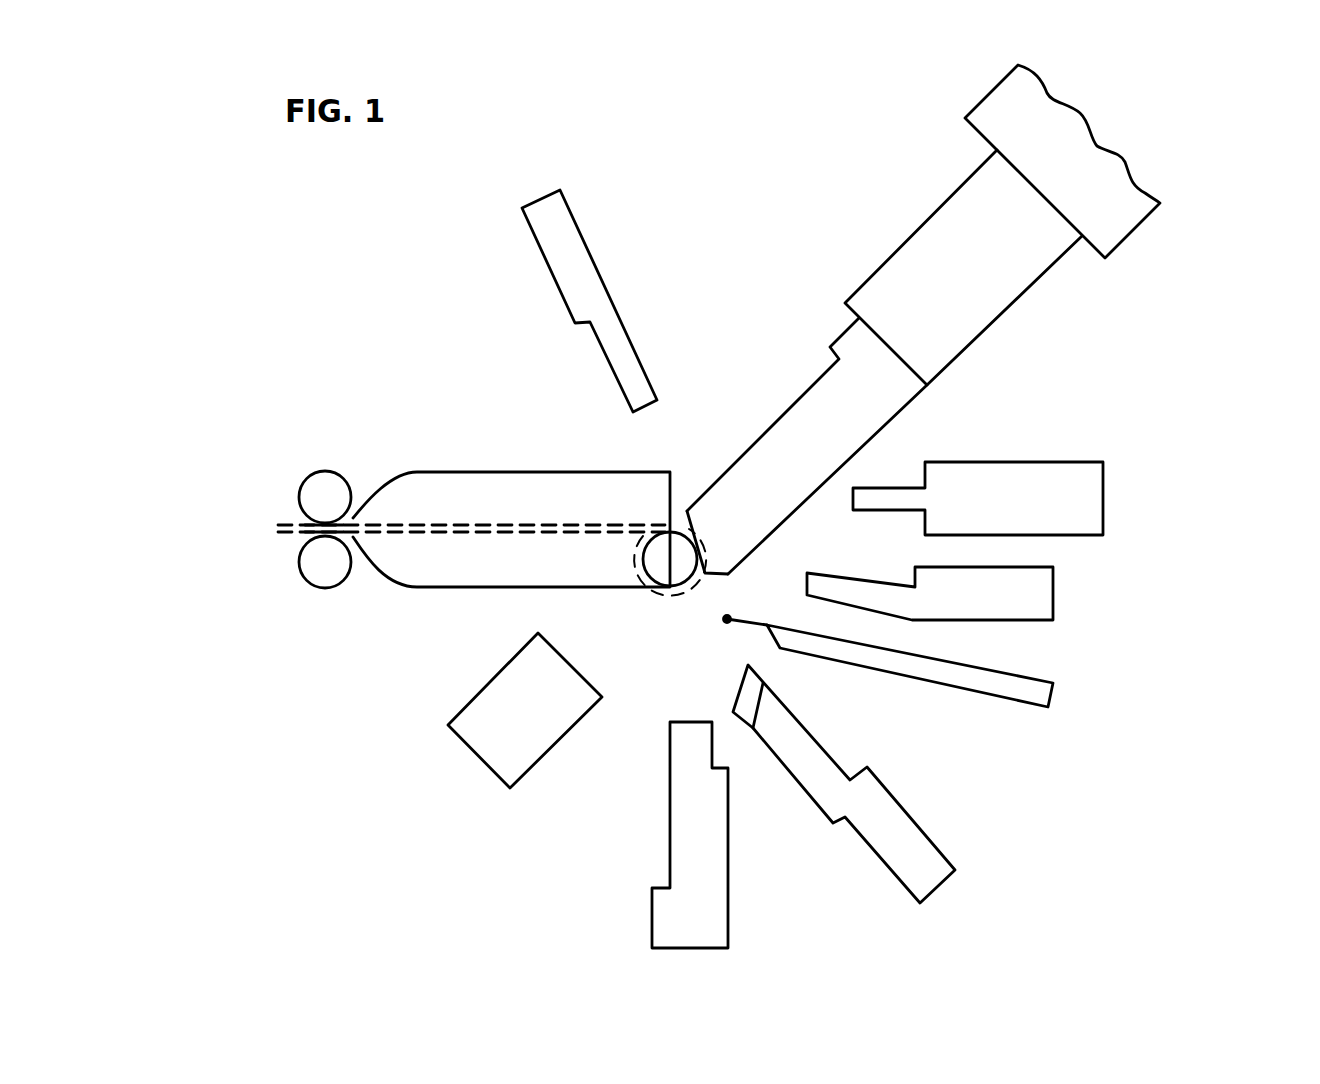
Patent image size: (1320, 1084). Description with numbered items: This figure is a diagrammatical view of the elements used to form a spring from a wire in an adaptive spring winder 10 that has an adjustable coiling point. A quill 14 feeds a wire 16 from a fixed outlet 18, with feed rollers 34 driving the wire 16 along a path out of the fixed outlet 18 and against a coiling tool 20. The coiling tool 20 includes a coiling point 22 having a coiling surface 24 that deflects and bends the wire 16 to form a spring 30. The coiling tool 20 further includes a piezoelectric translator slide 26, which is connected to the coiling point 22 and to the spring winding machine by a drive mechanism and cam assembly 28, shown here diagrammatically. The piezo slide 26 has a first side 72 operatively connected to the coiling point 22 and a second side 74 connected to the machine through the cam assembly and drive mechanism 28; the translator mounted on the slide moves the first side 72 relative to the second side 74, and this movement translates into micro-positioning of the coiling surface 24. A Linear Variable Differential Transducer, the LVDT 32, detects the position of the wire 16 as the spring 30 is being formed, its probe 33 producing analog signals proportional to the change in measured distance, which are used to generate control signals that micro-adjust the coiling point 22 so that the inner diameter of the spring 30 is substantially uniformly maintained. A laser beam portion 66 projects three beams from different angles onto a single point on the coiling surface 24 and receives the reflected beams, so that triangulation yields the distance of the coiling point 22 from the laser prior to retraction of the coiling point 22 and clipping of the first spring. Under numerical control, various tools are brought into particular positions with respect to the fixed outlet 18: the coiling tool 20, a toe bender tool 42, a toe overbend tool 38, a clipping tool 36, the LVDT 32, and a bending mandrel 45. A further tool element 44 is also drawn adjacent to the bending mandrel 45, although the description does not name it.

The adaptive spring winder 10 is at (306, 869).
The quill 14 is at (514, 472).
The wire 16 is at (465, 523).
The fixed outlet 18 is at (667, 530).
The coiling tool 20 is at (974, 319).
The coiling point 22 is at (805, 393).
The coiling surface 24 is at (688, 521).
The piezoelectric translator slide 26 is at (923, 224).
The drive mechanism and cam assembly 28 is at (1140, 229).
The spring 30 is at (670, 596).
The Linear Variable Differential Transducer (LVDT) 32 is at (997, 700).
The probe 33 is at (748, 624).
The feed rollers 34 is at (298, 560).
The clipping tool 36 is at (583, 238).
The toe overbend tool 38 is at (668, 858).
The toe bender tool 42 is at (923, 833).
The actuator 44 is at (1104, 497).
The bending mandrel 45 is at (1055, 595).
The laser beam portion 66 is at (470, 700).
The first side 72 is at (884, 342).
The second side 74 is at (1045, 197).